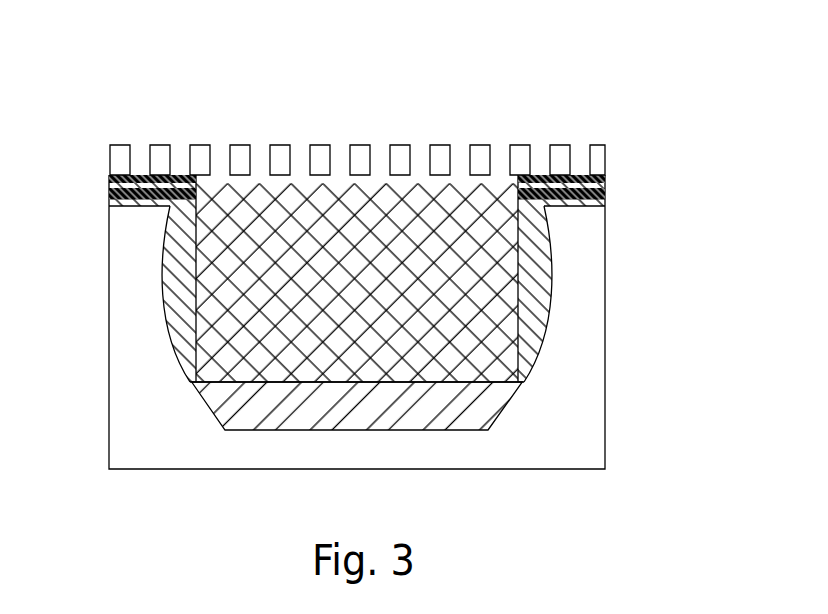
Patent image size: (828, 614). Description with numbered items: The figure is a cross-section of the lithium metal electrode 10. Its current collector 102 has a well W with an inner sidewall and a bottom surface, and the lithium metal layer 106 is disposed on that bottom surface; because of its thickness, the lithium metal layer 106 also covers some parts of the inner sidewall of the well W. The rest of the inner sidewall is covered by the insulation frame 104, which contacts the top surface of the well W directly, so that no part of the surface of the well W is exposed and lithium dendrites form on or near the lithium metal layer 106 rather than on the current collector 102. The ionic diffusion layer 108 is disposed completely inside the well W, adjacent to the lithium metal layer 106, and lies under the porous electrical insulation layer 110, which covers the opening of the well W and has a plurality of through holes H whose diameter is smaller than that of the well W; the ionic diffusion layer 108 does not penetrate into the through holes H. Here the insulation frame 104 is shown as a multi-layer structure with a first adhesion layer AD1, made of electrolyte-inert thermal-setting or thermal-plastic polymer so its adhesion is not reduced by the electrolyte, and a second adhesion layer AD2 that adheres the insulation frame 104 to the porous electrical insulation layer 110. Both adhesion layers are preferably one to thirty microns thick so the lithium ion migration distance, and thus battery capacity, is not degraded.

The lithium metal electrode 10 is at (195, 102).
The porous electrical insulation layer 110 is at (117, 155).
The through hole H is at (498, 160).
The second adhesion layer AD2 is at (605, 177).
The first adhesion layer AD1 is at (605, 193).
The current collector 102 is at (122, 317).
The insulation frame 104 is at (530, 273).
The ionic diffusion layer 108 is at (500, 322).
The lithium metal layer 106 is at (487, 415).
The well W is at (189, 398).